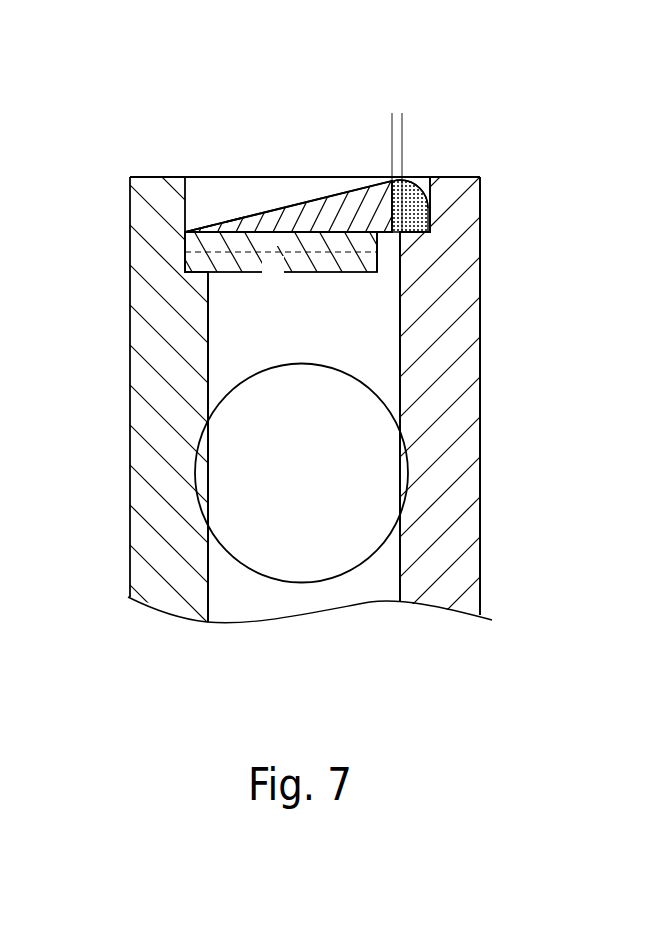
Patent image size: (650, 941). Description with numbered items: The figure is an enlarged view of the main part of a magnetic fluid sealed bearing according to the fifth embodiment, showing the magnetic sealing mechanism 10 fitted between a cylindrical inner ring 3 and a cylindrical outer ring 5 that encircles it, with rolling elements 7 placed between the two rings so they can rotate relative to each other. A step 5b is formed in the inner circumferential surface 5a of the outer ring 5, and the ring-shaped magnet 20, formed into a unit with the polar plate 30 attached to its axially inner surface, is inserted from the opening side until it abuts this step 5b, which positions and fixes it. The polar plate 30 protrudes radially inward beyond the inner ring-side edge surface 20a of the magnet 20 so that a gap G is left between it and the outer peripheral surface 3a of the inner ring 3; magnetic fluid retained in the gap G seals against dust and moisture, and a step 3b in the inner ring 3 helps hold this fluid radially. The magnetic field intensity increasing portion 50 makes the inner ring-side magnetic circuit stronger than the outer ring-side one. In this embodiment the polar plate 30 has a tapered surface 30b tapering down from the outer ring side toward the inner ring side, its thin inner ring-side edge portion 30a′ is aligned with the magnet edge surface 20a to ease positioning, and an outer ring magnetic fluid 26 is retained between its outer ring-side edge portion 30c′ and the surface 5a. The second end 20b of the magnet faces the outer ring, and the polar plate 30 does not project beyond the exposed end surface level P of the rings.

The magnetic sealing mechanism 10 is at (205, 79).
The exposed end surface level P is at (130, 177).
The inner ring 3 is at (130, 490).
The outer peripheral surface of the inner ring 3a is at (207, 578).
The step 3b is at (186, 260).
The outer ring 5 is at (480, 382).
The inner circumferential surface of the outer ring 5a is at (399, 576).
The step 5b is at (410, 232).
The rolling elements 7 is at (405, 472).
The magnet 20 is at (208, 305).
The inner ring-side edge surface of the magnet 20a is at (186, 244).
The second end of magnet 20b is at (378, 262).
The polar plate 30 is at (370, 200).
The edge portion on the inner ring side 30a′ is at (185, 233).
The tapered surface 30b is at (340, 195).
The outer ring-side edge portion 30c′ is at (423, 177).
The magnetic field intensity increasing portion 50 is at (232, 212).
The outer ring magnetic fluid 26 is at (432, 202).
The gap G is at (366, 123).